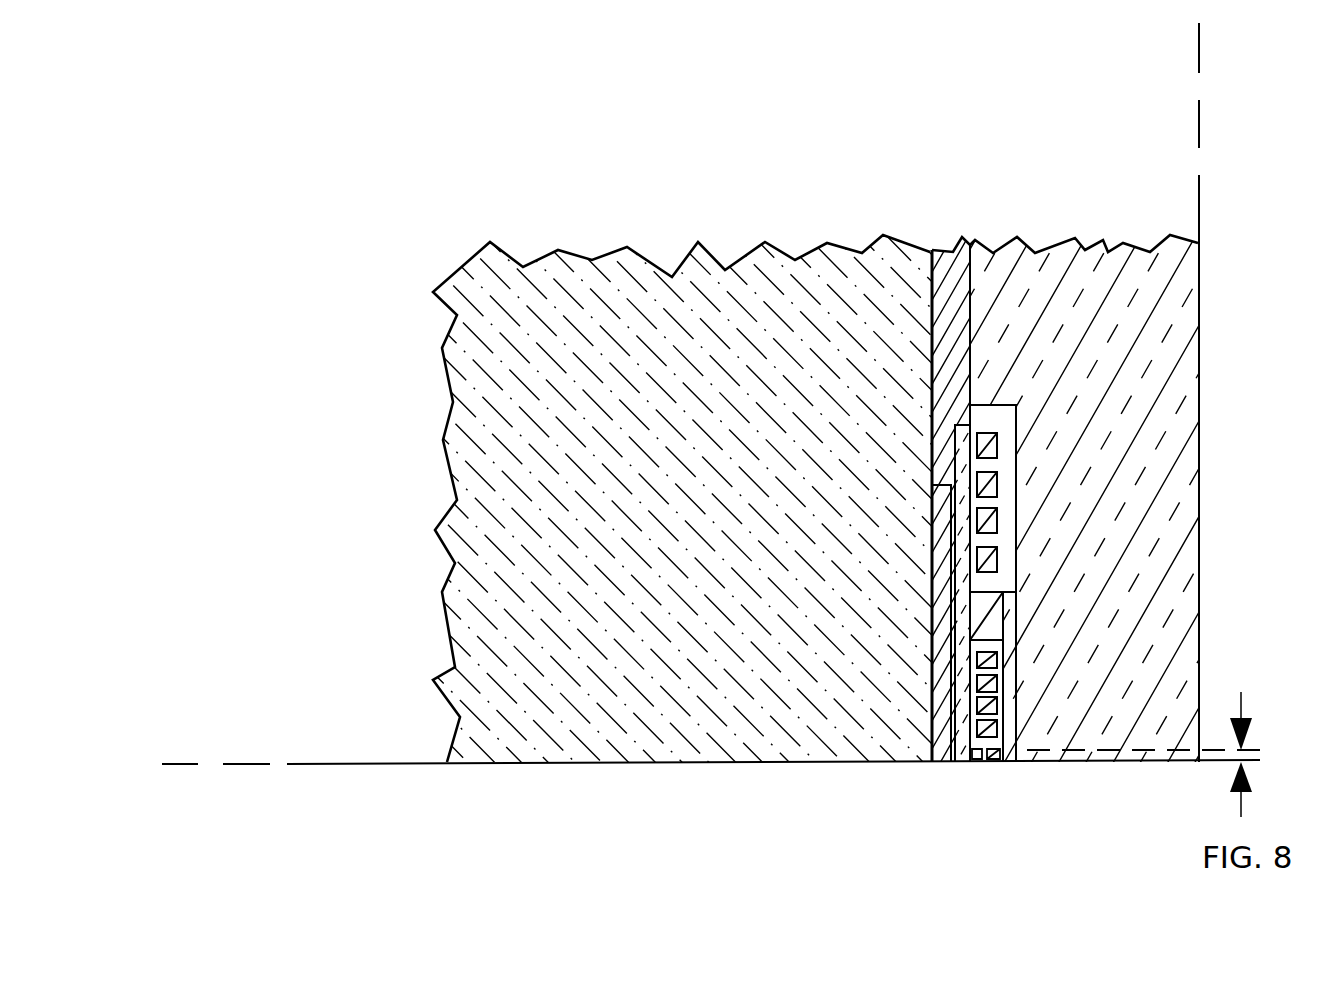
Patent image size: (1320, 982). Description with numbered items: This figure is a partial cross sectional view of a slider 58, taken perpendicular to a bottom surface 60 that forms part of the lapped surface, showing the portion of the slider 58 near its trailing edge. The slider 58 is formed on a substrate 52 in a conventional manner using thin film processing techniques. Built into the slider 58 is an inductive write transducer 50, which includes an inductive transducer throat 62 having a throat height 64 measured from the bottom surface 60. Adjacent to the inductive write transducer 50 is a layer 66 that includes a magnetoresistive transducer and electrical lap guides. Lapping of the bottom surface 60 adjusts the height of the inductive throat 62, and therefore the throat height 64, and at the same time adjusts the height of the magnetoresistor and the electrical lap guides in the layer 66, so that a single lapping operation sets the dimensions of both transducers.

The inductive write transducer 50 is at (1040, 609).
The substrate 52 is at (862, 253).
The slider 58 is at (336, 272).
The bottom surface 60 is at (555, 764).
The inductive transducer throat 62 is at (986, 762).
The throat height 64 is at (1240, 712).
The layer 66 is at (952, 762).